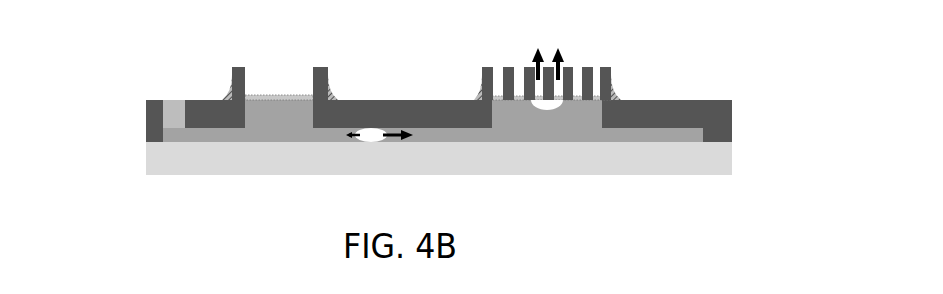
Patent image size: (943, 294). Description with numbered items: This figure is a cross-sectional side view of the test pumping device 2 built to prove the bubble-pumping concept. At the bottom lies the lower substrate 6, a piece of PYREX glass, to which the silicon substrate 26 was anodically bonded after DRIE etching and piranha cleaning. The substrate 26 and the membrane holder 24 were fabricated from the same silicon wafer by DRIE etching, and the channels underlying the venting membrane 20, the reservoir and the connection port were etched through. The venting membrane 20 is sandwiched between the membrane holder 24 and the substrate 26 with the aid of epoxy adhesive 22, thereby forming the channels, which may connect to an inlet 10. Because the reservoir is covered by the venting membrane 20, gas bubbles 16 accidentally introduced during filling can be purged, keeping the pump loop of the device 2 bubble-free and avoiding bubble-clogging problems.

The pumping device 2 is at (426, 130).
The lower substrate 6 is at (146, 157).
The inlet 10 is at (175, 100).
The gas bubbles 16 is at (370, 141).
The venting membrane 20 is at (277, 97).
The epoxy adhesive 22 is at (335, 80).
The membrane holder 24 is at (238, 67).
The substrate 26 is at (146, 121).